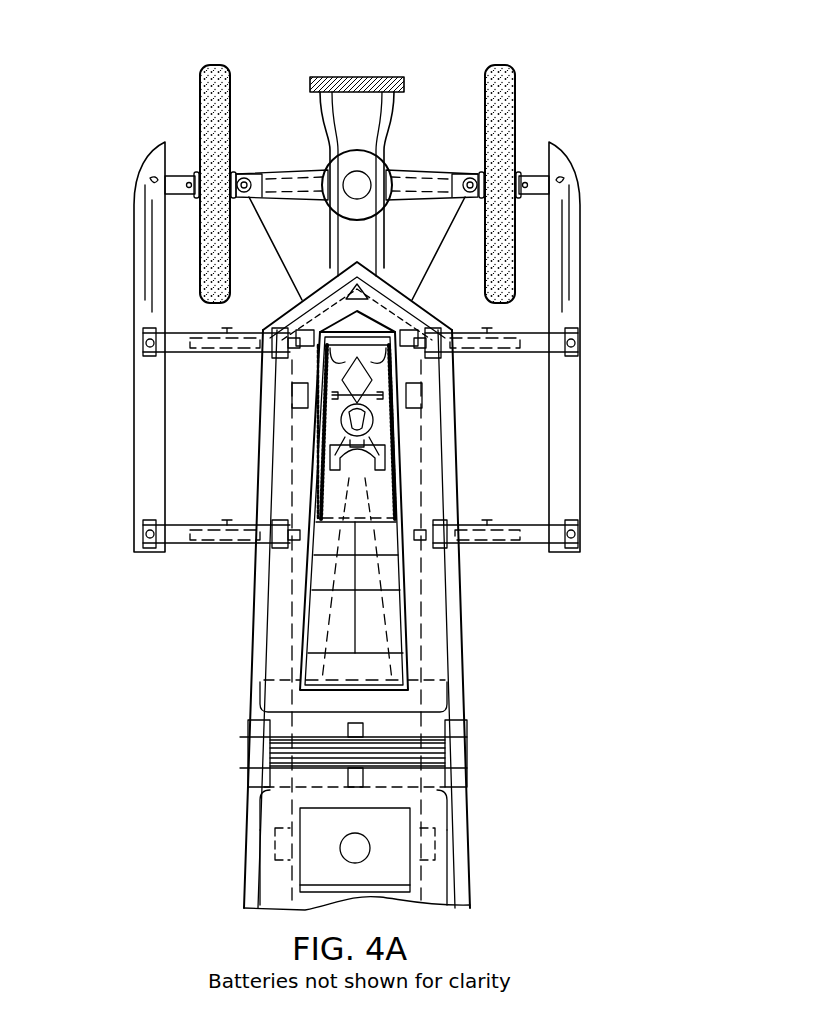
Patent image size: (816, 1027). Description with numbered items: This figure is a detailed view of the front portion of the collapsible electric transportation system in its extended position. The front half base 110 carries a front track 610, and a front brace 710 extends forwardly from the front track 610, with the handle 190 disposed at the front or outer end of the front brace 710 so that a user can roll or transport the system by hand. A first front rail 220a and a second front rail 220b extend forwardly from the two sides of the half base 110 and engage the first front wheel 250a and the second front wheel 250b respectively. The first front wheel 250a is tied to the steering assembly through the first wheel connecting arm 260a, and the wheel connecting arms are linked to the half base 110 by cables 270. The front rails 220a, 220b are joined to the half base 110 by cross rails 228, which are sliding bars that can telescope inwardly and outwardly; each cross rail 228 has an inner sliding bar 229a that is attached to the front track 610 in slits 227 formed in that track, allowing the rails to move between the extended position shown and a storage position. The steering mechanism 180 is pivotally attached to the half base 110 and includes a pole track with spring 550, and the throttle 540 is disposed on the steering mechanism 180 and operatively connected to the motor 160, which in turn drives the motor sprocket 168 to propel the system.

The half base 110 is at (380, 868).
The motor 160 is at (440, 752).
The motor sprocket 168 is at (270, 752).
The steering mechanism 180 is at (380, 670).
The handle 190 is at (357, 78).
The first front rail 220a is at (150, 487).
The second front rail 220b is at (575, 416).
The slits 227 is at (420, 350).
The cross rails 228 is at (185, 333).
The inner sliding bar 229a is at (282, 336).
The first front wheel 250a is at (210, 105).
The second front wheel 250b is at (508, 72).
The first wheel connecting arm 260a is at (287, 175).
The cables 270 is at (447, 238).
The throttle 540 is at (352, 703).
The pole track with spring 550 is at (320, 512).
The front track 610 is at (300, 370).
The front brace 710 is at (390, 124).